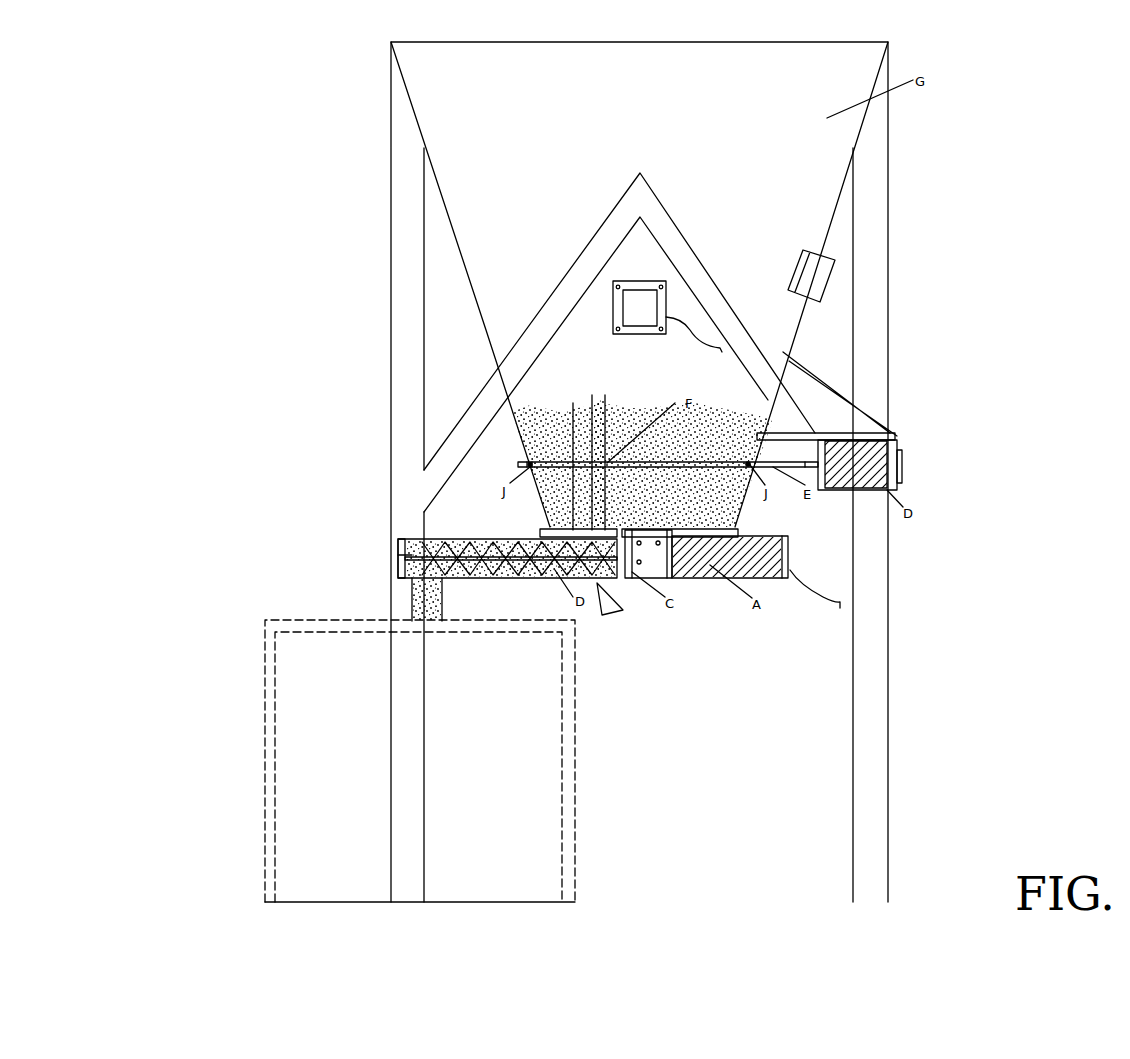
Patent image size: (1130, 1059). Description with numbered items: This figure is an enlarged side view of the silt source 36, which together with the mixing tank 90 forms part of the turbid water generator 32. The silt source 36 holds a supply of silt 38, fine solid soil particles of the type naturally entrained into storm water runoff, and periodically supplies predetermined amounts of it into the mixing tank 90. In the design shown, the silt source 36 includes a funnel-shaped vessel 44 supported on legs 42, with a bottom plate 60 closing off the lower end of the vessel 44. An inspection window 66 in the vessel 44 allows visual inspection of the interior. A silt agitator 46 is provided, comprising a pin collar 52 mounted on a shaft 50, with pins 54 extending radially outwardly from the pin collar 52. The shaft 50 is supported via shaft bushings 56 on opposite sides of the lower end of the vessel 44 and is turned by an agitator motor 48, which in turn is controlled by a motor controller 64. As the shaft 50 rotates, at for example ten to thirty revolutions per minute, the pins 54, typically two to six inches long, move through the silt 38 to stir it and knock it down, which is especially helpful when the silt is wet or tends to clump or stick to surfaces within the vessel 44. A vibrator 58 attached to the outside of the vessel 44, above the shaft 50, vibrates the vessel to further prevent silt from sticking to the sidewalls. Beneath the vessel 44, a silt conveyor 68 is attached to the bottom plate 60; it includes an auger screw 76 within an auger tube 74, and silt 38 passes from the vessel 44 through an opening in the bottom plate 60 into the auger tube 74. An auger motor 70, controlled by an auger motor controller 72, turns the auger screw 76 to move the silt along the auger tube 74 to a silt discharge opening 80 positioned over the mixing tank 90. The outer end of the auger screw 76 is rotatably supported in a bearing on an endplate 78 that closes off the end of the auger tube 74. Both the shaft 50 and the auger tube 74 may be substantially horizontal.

The turbid water generator 32 is at (649, 460).
The silt source 36 is at (921, 108).
The silt 38 is at (573, 403).
The legs 42 is at (878, 647).
The vessel 44 is at (502, 220).
The silt agitator 46 is at (903, 438).
The agitator motor 48 is at (880, 458).
The shaft 50 is at (660, 310).
The pin collar 52 is at (563, 432).
The pins 54 is at (493, 348).
The shaft bushings 56 is at (752, 462).
The vibrator 58 is at (822, 272).
The bottom plate 60 is at (567, 526).
The motor controller 64 is at (903, 467).
The inspection window 66 is at (645, 308).
The silt conveyor 68 is at (614, 612).
The auger motor 70 is at (722, 568).
The auger motor controller 72 is at (790, 570).
The auger tube 74 is at (445, 566).
The auger screw 76 is at (550, 567).
The endplate 78 is at (342, 564).
The silt discharge opening 80 is at (407, 597).
The mixing tank 90 is at (320, 682).